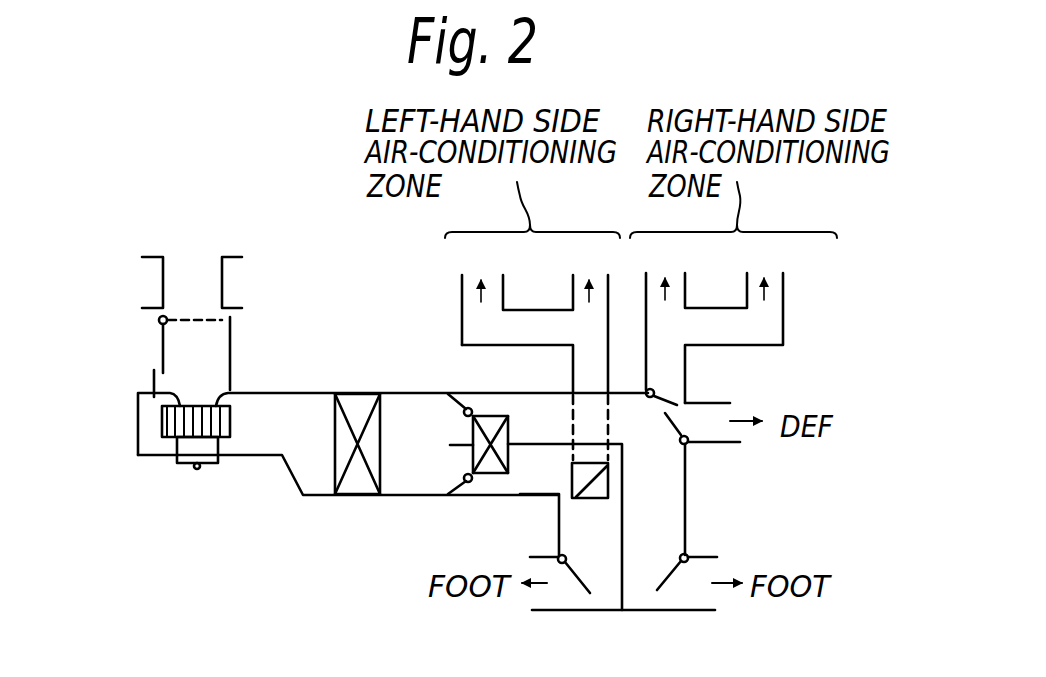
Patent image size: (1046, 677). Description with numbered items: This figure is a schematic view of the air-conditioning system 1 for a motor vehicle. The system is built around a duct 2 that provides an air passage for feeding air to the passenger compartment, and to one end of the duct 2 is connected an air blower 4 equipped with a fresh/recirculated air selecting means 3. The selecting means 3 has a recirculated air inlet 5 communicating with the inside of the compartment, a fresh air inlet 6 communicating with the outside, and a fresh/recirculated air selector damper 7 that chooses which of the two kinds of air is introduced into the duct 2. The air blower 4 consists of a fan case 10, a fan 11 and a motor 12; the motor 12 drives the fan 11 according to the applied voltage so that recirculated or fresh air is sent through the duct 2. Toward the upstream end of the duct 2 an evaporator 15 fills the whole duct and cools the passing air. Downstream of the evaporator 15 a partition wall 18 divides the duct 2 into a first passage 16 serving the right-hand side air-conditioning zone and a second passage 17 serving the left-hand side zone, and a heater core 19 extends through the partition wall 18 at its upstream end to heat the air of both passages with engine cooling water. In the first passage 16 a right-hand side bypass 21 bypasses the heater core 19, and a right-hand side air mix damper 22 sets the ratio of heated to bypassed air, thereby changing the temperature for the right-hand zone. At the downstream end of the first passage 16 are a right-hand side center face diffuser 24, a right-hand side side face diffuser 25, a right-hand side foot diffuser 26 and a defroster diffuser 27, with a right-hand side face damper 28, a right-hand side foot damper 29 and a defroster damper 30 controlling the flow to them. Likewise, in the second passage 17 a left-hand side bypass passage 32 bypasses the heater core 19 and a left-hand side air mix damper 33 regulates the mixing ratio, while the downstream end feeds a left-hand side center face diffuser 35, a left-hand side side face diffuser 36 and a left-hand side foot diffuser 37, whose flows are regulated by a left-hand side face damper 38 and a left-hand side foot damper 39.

The air-conditioning system 1 is at (280, 512).
The duct 2 is at (403, 393).
The fresh/recirculated air selecting means 3 is at (140, 290).
The air blower 4 is at (143, 468).
The recirculated air inlet 5 is at (157, 357).
The fresh air inlet 6 is at (188, 307).
The fresh/recirculated air selector damper 7 is at (162, 335).
The fan case 10 is at (138, 412).
The fan 11 is at (160, 422).
The motor 12 is at (188, 468).
The evaporator 15 is at (358, 395).
The first passage 16 is at (552, 405).
The second passage 17 is at (542, 483).
The partition wall 18 is at (623, 508).
The heater core 19 is at (497, 472).
The right-hand side bypass 21 is at (498, 398).
The right-hand side air mix damper 22 is at (467, 406).
The right-hand side center face diffuser 24 is at (677, 275).
The right-hand side side face diffuser 25 is at (773, 275).
The right-hand side foot diffuser 26 is at (702, 598).
The defroster diffuser 27 is at (730, 405).
The right-hand side face damper 28 is at (673, 400).
The right-hand side foot damper 29 is at (652, 583).
The defroster damper 30 is at (695, 443).
The left-hand side bypass passage 32 is at (480, 490).
The left-hand side air mix damper 33 is at (453, 493).
The left-hand side center face diffuser 35 is at (580, 275).
The left-hand side side face diffuser 36 is at (470, 275).
The left-hand side foot diffuser 37 is at (555, 598).
The left-hand side face damper 38 is at (600, 496).
The left-hand side foot damper 39 is at (578, 583).